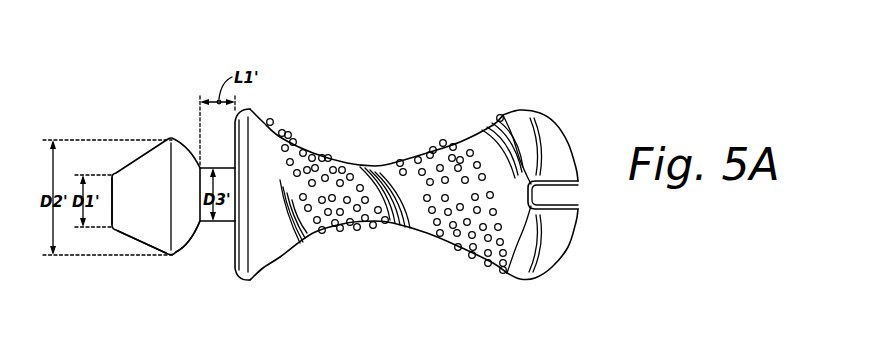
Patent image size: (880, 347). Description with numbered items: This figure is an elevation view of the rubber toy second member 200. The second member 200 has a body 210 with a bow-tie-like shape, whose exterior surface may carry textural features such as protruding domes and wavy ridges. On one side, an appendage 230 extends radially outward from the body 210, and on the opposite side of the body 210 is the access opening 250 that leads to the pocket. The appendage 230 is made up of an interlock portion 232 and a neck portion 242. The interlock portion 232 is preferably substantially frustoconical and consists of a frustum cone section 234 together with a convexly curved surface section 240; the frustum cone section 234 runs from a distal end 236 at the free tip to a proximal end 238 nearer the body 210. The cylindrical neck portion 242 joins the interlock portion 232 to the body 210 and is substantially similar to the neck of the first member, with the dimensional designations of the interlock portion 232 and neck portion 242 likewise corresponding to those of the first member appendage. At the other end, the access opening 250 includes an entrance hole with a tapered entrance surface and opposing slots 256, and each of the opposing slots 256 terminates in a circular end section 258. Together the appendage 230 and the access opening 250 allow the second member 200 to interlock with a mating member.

The second member 200 is at (452, 98).
The body 210 is at (282, 243).
The appendage 230 is at (152, 128).
The interlock portion 232 is at (131, 238).
The frustum cone section 234 is at (152, 228).
The distal end 236 is at (112, 190).
The proximal end 238 is at (171, 150).
The convexly curved surface section 240 is at (196, 238).
The neck portion 242 is at (220, 228).
The access opening 250 is at (580, 195).
The opposing slots 256 is at (563, 213).
The circular end sections 258 is at (503, 250).